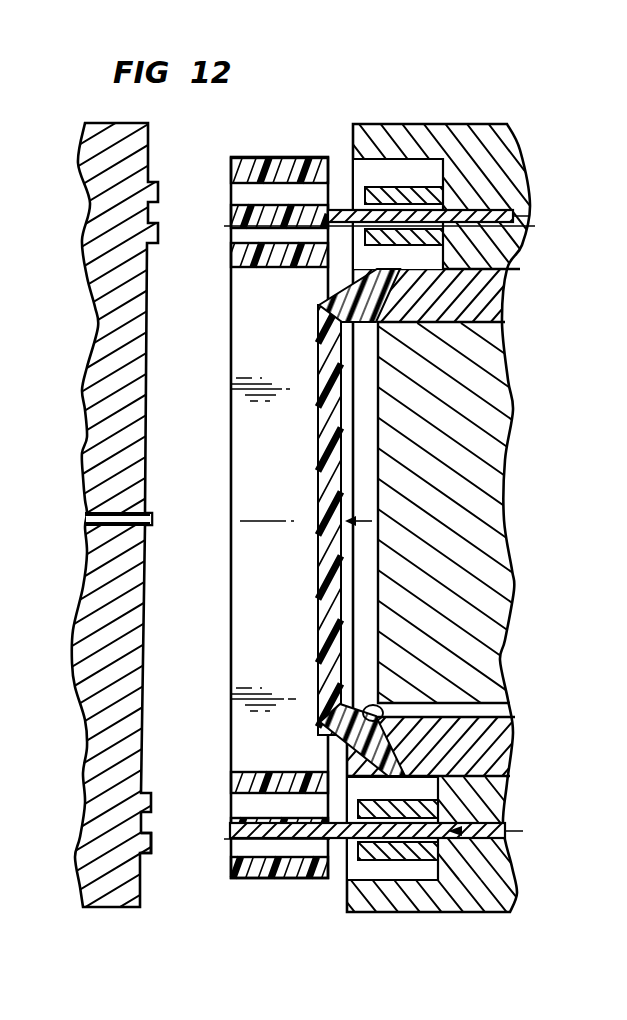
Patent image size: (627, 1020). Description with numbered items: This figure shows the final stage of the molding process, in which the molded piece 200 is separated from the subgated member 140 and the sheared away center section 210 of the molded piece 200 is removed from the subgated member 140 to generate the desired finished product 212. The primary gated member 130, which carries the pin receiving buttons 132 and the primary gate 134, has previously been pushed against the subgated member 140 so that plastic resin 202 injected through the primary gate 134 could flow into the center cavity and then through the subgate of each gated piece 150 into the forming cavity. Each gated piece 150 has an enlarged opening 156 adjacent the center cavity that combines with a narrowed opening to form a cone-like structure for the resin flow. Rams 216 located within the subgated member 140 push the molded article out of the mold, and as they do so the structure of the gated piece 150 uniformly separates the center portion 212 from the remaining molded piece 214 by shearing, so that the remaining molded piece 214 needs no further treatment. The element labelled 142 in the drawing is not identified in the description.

The primary gated member 130 is at (118, 586).
The pin receiving buttons 132 is at (153, 845).
The primary gate 134 is at (110, 506).
The subgated member 140 is at (516, 517).
The lower housing portion 142 is at (392, 914).
The gated piece 150 is at (480, 291).
The enlarged opening 156 is at (440, 713).
The molded piece 200 is at (233, 252).
The plastic resin 202 is at (318, 373).
The sheared away center section 210 is at (318, 459).
The finished product 212 is at (233, 298).
The remaining molded piece 214 is at (268, 881).
The rams 216 is at (522, 213).